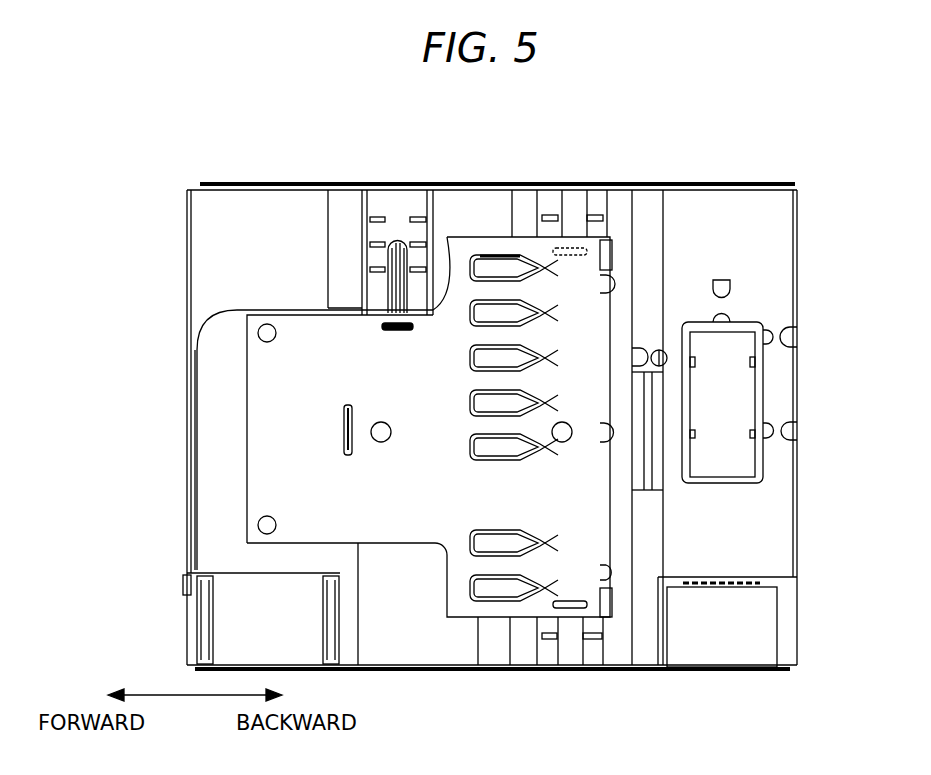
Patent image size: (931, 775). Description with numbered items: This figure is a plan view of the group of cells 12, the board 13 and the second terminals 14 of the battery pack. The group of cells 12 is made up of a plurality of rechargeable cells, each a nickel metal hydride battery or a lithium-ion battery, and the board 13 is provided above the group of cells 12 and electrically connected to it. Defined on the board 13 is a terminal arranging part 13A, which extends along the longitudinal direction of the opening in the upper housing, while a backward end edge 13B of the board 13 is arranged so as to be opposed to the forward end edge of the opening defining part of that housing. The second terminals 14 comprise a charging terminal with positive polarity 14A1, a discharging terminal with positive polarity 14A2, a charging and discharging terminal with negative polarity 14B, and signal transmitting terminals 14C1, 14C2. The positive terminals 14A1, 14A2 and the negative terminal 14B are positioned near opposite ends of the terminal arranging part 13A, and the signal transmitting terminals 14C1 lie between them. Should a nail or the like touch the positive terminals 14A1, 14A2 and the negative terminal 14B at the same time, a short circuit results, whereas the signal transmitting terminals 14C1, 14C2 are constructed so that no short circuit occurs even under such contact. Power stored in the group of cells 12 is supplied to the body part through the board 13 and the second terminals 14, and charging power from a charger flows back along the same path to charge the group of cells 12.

The group of cells 12 is at (262, 180).
The board 13 is at (563, 333).
The terminal arranging part 13A is at (483, 252).
The backward end edge 13B is at (592, 430).
The second terminals 14 is at (431, 545).
The charging terminal with positive polarity 14A1 is at (486, 602).
The discharging terminal with positive polarity 14A2 is at (528, 558).
The charging and discharging terminal with negative polarity 14B is at (466, 305).
The signal transmitting terminals 14C1 is at (470, 365).
The signal transmitting terminal 14C2 is at (528, 258).